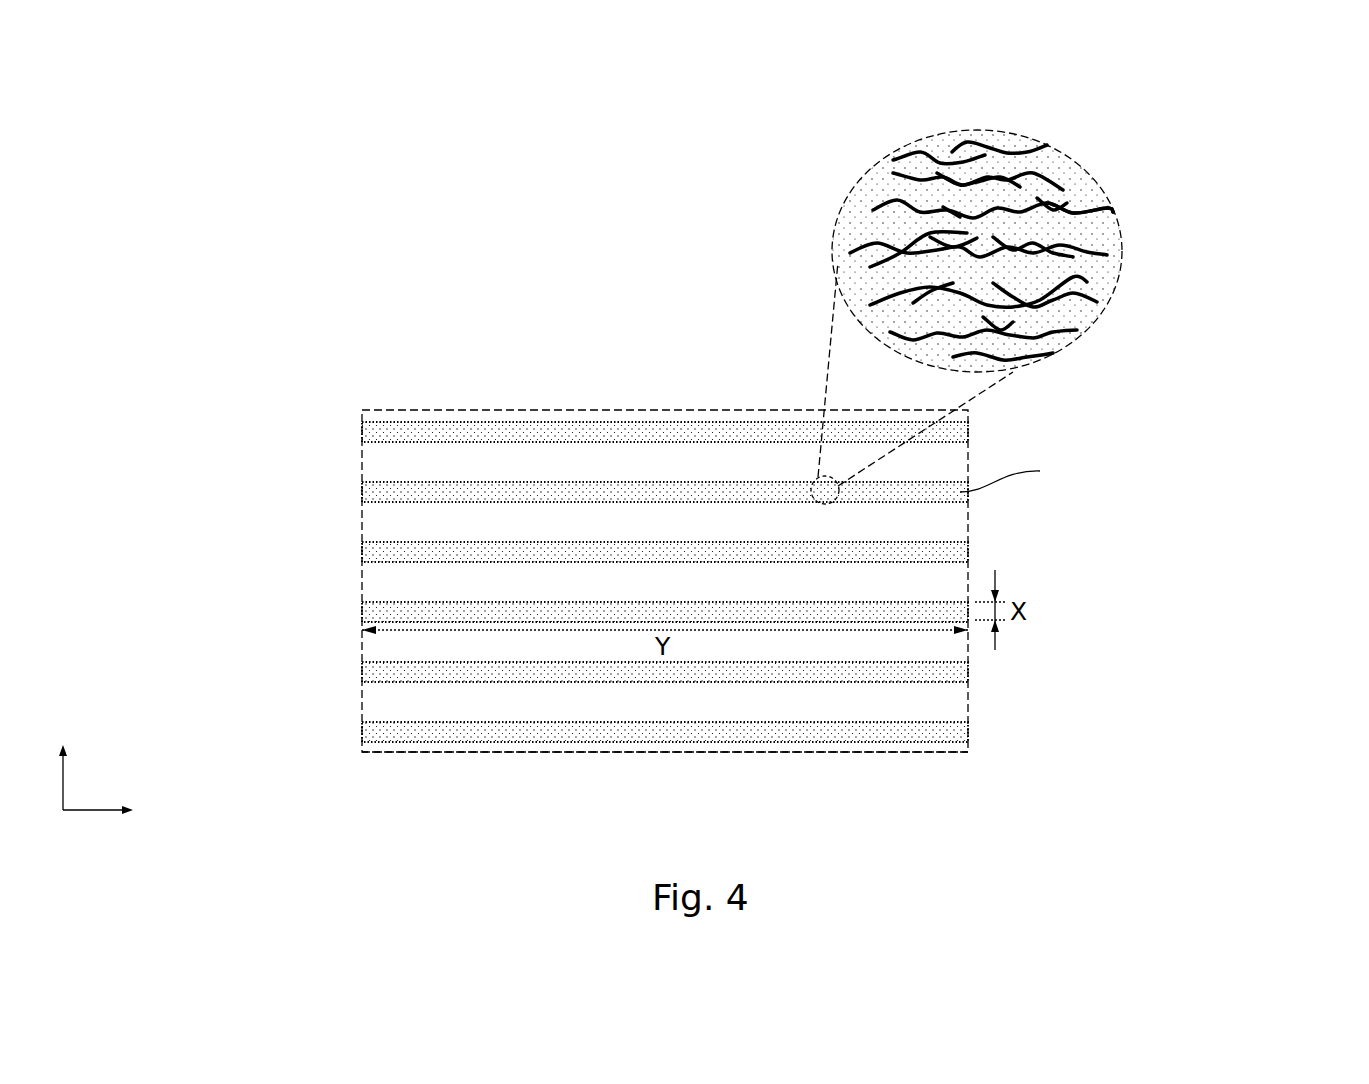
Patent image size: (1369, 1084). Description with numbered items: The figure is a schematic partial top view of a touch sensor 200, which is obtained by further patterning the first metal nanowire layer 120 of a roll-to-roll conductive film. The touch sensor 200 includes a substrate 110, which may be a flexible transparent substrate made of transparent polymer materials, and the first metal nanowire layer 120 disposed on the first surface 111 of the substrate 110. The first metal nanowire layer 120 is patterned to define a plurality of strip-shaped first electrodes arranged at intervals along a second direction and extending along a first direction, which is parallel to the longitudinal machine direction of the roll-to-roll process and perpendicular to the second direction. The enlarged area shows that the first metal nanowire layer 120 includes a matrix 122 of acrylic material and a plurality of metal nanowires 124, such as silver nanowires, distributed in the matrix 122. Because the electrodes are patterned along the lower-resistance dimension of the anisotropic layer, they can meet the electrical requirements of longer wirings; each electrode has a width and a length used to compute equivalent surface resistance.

The touch sensor 200 is at (206, 104).
The substrate 110 is at (852, 752).
The first surface 111 is at (932, 755).
The first metal nanowire layer 120 is at (1242, 130).
The matrix 122 is at (1095, 222).
The metal nanowires 124 is at (1065, 186).